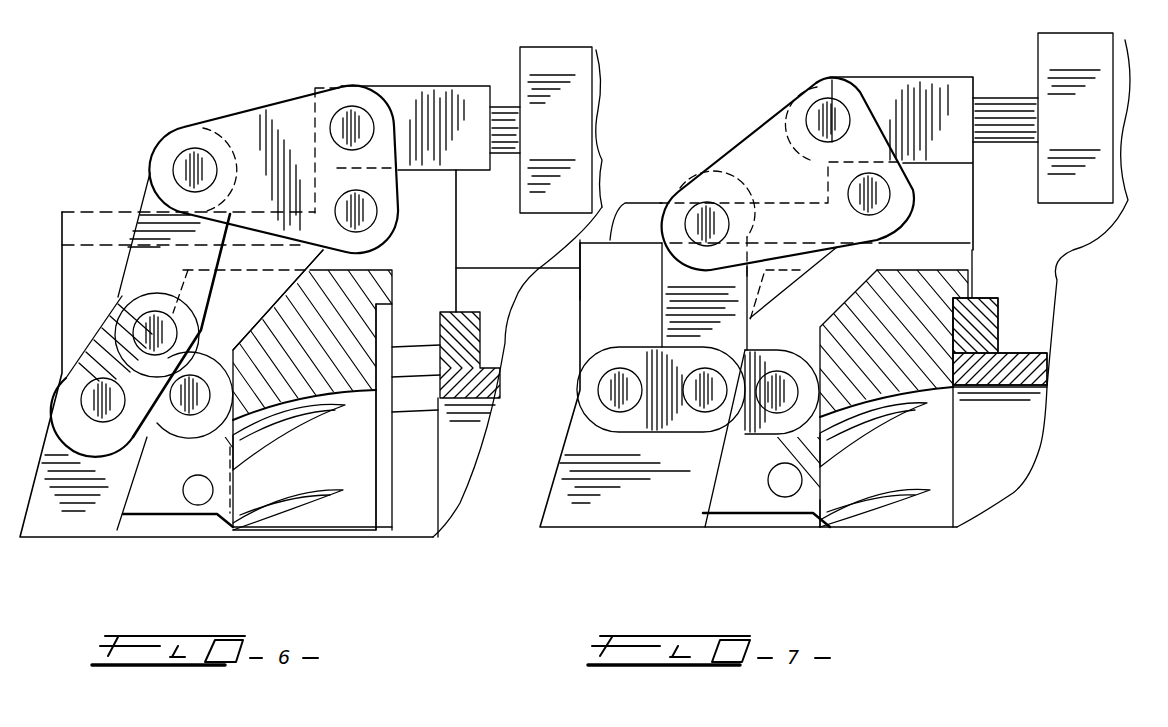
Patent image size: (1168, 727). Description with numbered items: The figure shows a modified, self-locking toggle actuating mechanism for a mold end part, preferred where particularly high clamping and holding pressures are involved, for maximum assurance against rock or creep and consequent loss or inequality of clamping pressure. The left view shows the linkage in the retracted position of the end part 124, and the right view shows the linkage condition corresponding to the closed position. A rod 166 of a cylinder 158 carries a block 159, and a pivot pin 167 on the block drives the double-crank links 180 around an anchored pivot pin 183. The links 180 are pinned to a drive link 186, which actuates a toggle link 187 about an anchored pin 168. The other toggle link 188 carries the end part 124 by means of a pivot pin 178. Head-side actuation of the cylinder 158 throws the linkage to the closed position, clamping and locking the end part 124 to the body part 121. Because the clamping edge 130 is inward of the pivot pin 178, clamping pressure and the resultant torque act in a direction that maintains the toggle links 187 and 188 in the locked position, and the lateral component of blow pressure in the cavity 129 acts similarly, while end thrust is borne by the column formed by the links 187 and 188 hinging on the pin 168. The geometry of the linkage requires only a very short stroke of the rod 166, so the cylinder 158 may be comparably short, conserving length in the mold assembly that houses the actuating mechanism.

In FIG. 7, the body part 121 is at (1018, 370).
In FIG. 6, the end part 124 is at (353, 337).
In FIG. 7, the end part 124 is at (938, 308).
In FIG. 7, the cavity 129 is at (918, 469).
In FIG. 7, the clamping edge 130 is at (820, 525).
In FIG. 6, the cylinder 158 is at (597, 82).
In FIG. 6, the block 159 is at (443, 105).
In FIG. 6, the rod 166 is at (507, 132).
In FIG. 6, the pivot pin 167 is at (357, 117).
In FIG. 6, the anchored pin 168 is at (82, 400).
In FIG. 7, the anchored pin 168 is at (628, 378).
In FIG. 6, the pivot pin 178 is at (211, 398).
In FIG. 7, the pivot pin 178 is at (782, 378).
In FIG. 6, the double-crank links 180 is at (245, 133).
In FIG. 7, the double-crank links 180 is at (787, 179).
In FIG. 6, the anchored pivot pin 183 is at (363, 212).
In FIG. 6, the drive link 186 is at (150, 230).
In FIG. 6, the toggle link 187 is at (107, 333).
In FIG. 7, the toggle link 187 is at (647, 413).
In FIG. 6, the toggle link 188 is at (207, 350).
In FIG. 7, the toggle link 188 is at (743, 430).